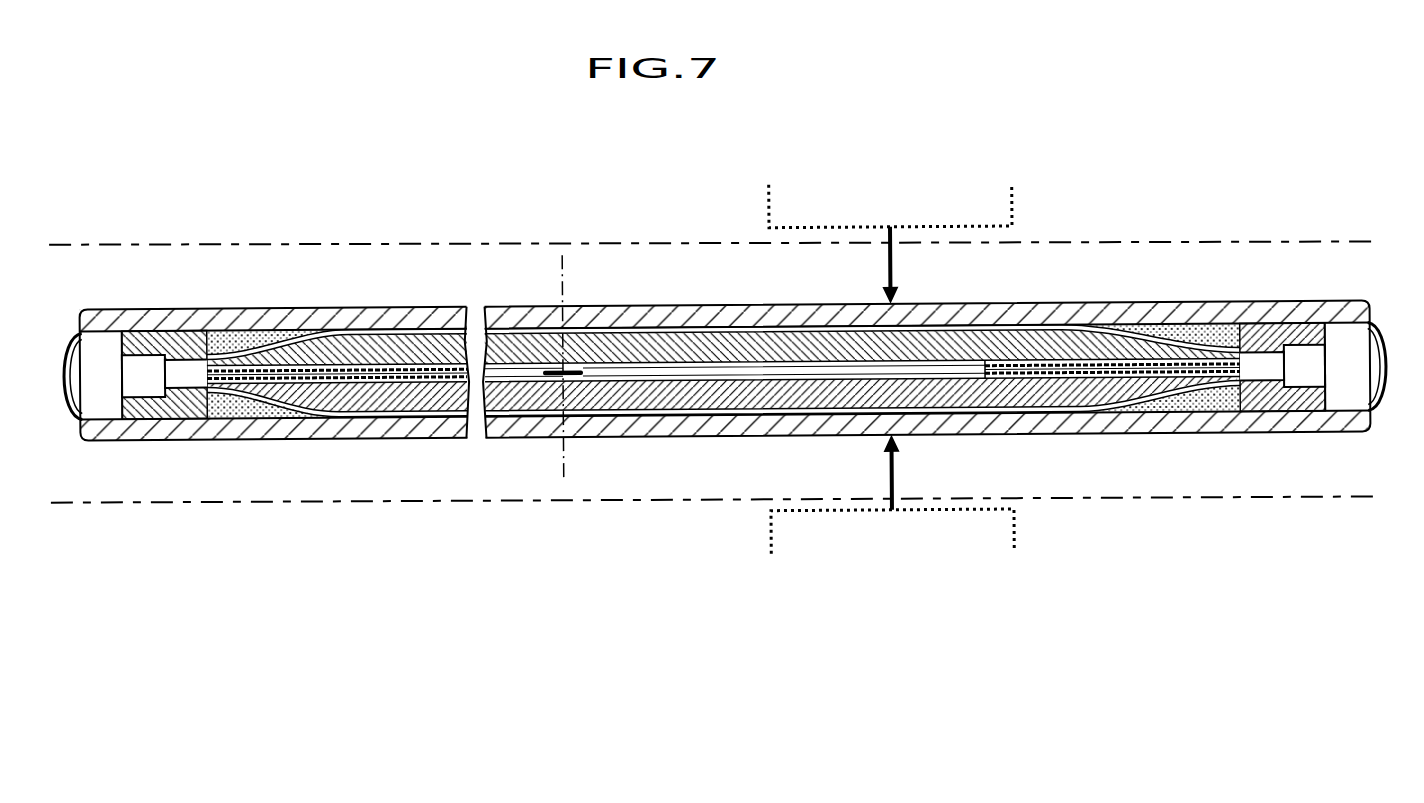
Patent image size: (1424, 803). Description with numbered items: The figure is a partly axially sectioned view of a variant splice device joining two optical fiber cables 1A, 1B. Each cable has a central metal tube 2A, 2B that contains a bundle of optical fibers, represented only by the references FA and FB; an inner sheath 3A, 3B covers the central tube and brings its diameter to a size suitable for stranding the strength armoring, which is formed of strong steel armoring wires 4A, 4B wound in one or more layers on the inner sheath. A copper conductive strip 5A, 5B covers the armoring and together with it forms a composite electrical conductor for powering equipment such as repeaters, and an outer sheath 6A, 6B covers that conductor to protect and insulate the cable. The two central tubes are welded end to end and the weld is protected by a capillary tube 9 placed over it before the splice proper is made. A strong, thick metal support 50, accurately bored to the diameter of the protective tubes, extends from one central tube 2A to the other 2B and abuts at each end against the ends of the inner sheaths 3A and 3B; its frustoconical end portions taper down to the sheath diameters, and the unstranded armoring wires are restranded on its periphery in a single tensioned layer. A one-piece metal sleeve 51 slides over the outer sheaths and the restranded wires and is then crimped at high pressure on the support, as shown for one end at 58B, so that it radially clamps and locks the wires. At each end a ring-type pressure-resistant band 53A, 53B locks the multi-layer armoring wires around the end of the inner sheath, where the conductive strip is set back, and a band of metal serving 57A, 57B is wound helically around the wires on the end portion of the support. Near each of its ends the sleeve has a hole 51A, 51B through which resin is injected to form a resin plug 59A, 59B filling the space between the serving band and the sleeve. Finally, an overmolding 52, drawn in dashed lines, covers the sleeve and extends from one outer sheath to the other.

The final overmolding 52 is at (461, 244).
The metal sleeve 51 is at (665, 312).
The resin injection hole 51A is at (236, 320).
The resin injection hole 51B is at (1210, 268).
The metal support 50 is at (780, 347).
The outer sheath 6A is at (70, 340).
The outer sheath 6B is at (1360, 404).
The cable 1A is at (110, 348).
The cable 1B is at (1355, 344).
The conductive strip 5A is at (152, 352).
The conductive strip 5B is at (1305, 357).
The inner sheath 3A is at (190, 382).
The inner sheath 3B is at (1262, 368).
The armoring wires 4A is at (250, 315).
The armoring wires 4B is at (1230, 336).
The pressure-resistant band 53A is at (147, 401).
The pressure-resistant band 53B is at (1318, 406).
The resin plug 59A is at (222, 408).
The resin plug 59B is at (1196, 408).
The metal serving band 57A is at (272, 412).
The metal serving band 57B is at (1240, 400).
The central metal tube 2A is at (400, 386).
The central metal tube 2B is at (1050, 380).
The bundle of optical fibers FA is at (518, 377).
The bundle of optical fibers FB is at (645, 376).
The capillary tube 9 is at (582, 376).
The crimping location 58B is at (897, 271).